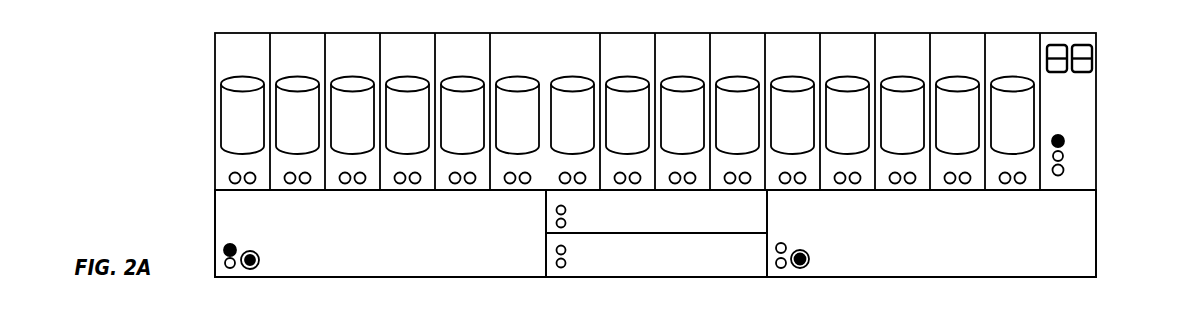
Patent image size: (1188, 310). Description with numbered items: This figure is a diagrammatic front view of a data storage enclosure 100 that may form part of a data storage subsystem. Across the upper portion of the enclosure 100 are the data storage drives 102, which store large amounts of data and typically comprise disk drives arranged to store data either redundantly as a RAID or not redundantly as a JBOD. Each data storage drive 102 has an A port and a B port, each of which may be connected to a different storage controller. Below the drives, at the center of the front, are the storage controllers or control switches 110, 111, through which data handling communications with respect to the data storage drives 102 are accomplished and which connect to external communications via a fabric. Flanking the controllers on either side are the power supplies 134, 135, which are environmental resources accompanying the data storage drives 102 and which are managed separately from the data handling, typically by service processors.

The data storage enclosure 100 is at (215, 70).
The data storage drives 102 is at (352, 76).
The control switch 110 is at (748, 220).
The control switch 111 is at (655, 277).
The power supply 134 is at (215, 232).
The power supply 135 is at (1097, 233).